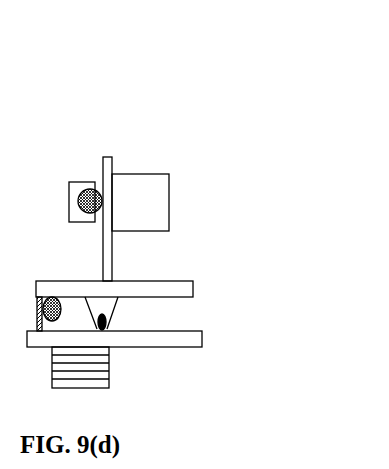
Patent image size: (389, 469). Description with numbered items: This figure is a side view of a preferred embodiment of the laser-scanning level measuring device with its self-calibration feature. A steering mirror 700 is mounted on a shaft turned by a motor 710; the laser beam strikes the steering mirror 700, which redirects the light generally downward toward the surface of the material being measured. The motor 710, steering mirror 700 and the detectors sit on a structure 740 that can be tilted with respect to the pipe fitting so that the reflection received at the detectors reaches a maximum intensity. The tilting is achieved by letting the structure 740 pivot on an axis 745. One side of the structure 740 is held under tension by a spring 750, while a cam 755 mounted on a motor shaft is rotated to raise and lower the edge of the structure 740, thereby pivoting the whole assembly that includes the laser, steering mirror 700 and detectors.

The steering mirror 700 is at (81, 178).
The motor 710 is at (170, 197).
The structure 740 is at (194, 290).
The axis 745 is at (112, 322).
The cam 755 is at (56, 314).
The spring 750 is at (44, 331).